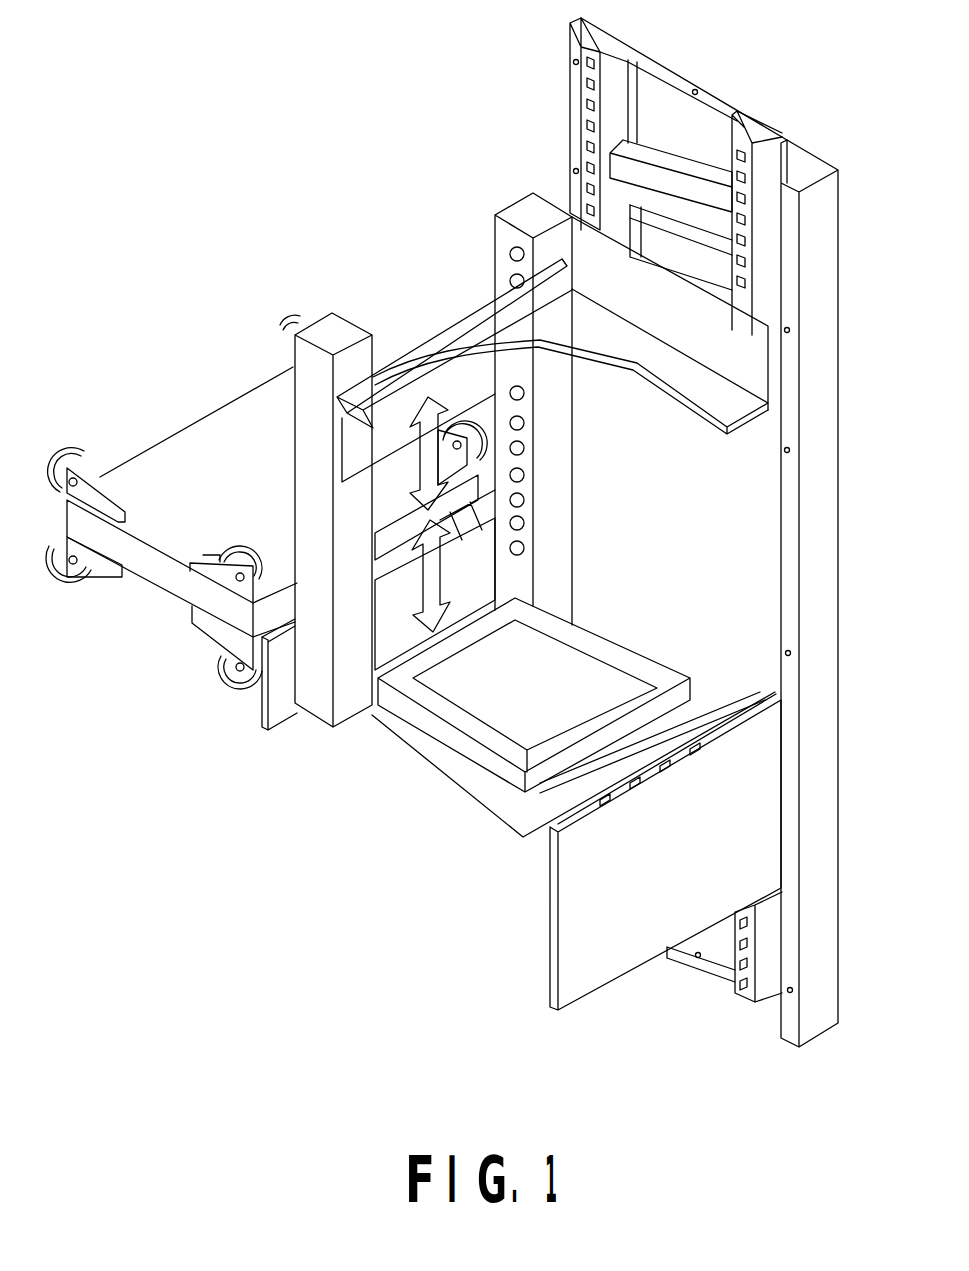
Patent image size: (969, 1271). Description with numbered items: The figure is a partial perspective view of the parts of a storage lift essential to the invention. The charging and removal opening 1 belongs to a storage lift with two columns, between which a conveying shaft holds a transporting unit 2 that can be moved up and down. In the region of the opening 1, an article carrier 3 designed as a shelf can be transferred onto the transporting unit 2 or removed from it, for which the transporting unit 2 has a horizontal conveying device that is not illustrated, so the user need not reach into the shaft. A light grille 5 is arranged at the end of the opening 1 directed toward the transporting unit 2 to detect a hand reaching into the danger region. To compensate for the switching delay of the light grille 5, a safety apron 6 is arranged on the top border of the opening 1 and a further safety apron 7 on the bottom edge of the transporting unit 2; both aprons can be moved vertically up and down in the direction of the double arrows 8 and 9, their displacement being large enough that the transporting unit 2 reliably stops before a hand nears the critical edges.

The charging and removal opening 1 is at (733, 498).
The transporting unit 2 is at (210, 447).
The article carrier 3 is at (603, 692).
The light grille 5 is at (524, 448).
The safety apron 6 is at (450, 340).
The safety apron 7 is at (280, 672).
The double arrow 8 is at (417, 410).
The double arrow 9 is at (440, 636).